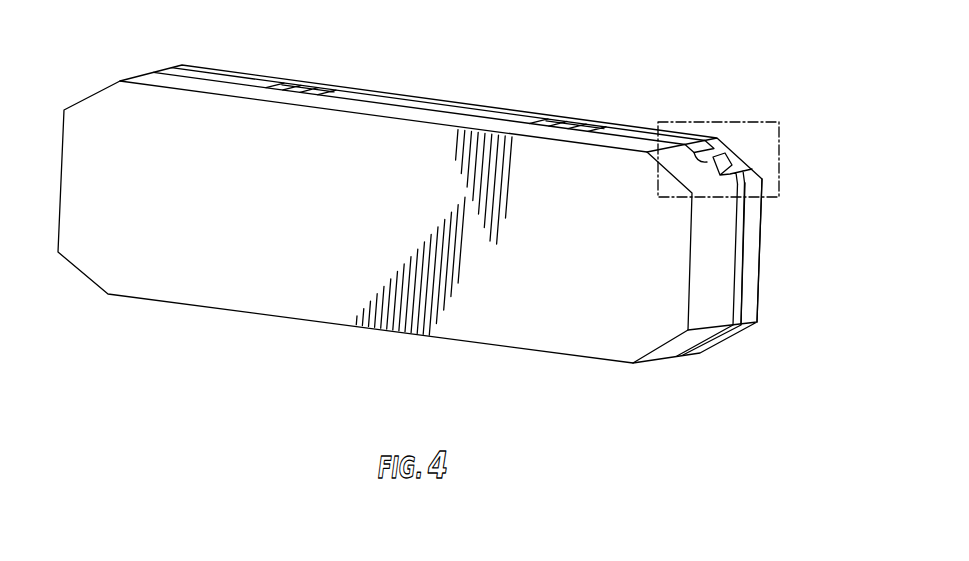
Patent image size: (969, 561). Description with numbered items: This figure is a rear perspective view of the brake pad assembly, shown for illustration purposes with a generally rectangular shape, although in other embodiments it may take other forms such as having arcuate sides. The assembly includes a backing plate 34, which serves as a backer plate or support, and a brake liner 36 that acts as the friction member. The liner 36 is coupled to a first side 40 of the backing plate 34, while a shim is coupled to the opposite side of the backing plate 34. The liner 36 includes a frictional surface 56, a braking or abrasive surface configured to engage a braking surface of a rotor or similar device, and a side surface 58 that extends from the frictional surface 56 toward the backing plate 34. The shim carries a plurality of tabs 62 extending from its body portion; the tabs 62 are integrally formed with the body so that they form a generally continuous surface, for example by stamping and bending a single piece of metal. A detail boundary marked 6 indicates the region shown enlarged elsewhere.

The backing plate 34 is at (745, 292).
The brake liner 36 is at (526, 325).
The first side of backing plate 40 is at (211, 73).
The frictional surface 56 is at (378, 256).
The side surface 58 is at (708, 239).
The tabs 62 is at (555, 118).
The detail view boundary (FIG. 6) 6 is at (780, 125).